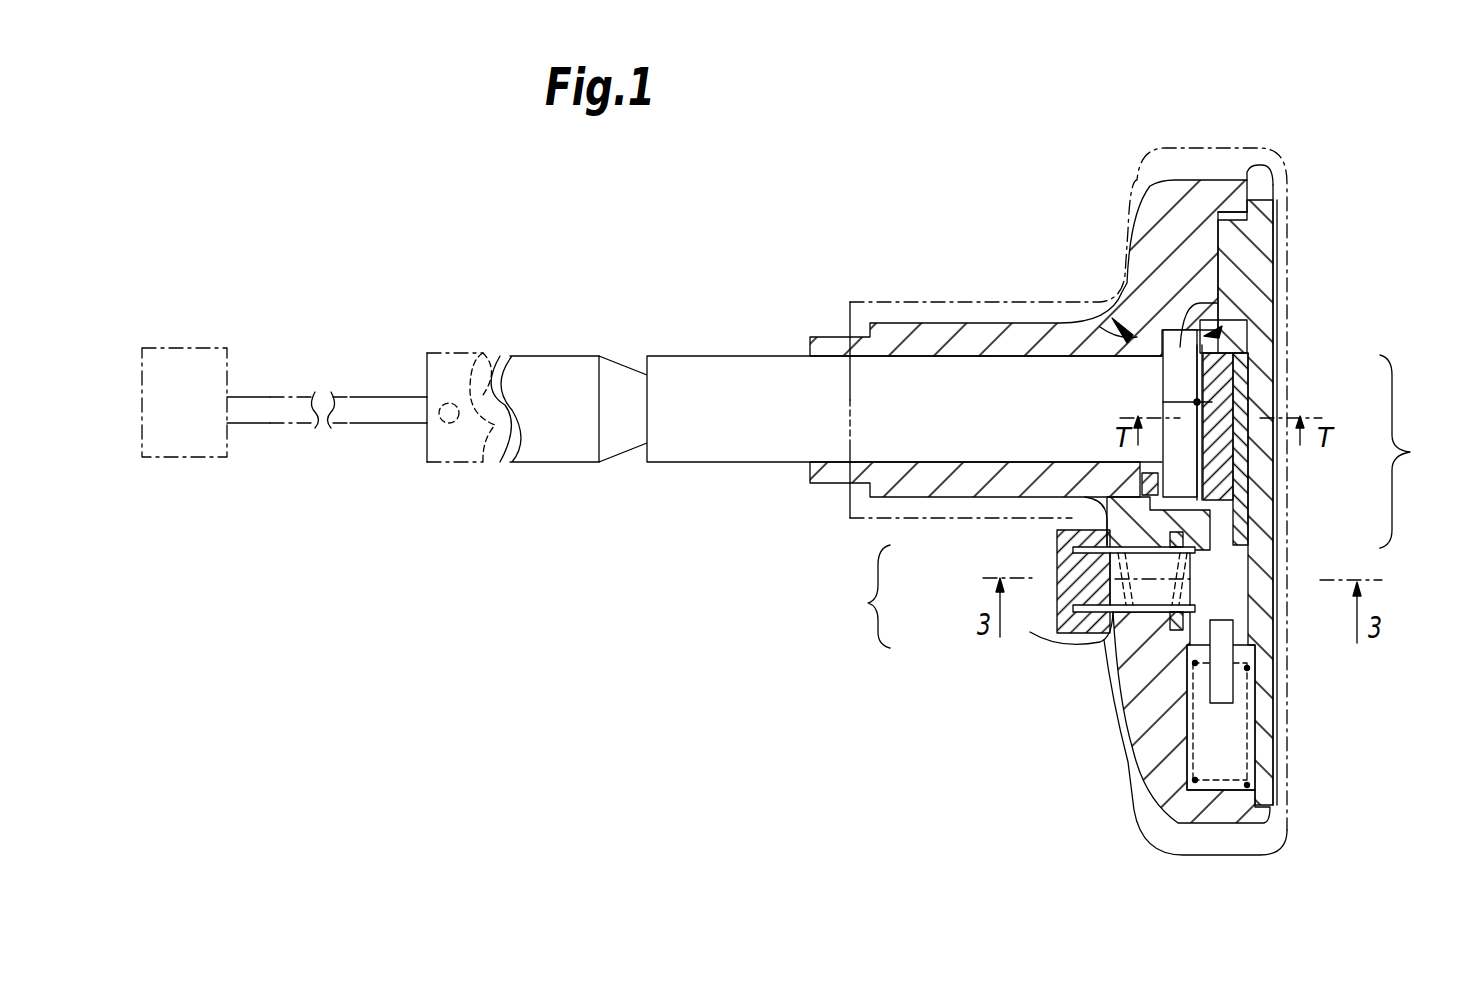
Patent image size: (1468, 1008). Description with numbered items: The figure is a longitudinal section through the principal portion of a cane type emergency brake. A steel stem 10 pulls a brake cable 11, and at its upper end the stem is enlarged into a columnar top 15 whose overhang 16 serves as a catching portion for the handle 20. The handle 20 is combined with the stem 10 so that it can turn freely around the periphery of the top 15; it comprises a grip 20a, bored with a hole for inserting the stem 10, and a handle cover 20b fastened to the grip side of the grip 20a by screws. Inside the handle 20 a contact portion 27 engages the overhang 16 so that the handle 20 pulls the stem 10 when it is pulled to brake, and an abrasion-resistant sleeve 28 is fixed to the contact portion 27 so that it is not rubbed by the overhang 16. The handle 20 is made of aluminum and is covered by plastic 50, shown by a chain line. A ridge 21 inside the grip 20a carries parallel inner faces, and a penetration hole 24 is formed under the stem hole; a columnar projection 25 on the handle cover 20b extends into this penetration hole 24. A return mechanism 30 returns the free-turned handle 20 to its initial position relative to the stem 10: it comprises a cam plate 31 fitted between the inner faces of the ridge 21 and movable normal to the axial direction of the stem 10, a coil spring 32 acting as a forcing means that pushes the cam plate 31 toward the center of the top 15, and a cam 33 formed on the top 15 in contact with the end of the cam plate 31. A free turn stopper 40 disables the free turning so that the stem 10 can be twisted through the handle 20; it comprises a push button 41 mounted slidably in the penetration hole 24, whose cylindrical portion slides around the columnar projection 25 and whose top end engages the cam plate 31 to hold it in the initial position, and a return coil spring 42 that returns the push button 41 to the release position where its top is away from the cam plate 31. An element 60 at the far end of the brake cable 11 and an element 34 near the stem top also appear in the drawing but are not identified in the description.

The stem 10 is at (668, 378).
The brake cable 11 is at (352, 428).
The engine / power unit 60 is at (213, 445).
The handle 20 is at (1158, 218).
The grip 20a is at (1267, 153).
The handle cover 20b is at (1265, 250).
The ridge 21 is at (1278, 187).
The overhang 16 is at (1217, 310).
The top 15 is at (1222, 335).
The cam 33 is at (1240, 393).
The return mechanism 30 is at (1420, 451).
The cam plate 31 is at (1240, 472).
The columnar projection 25 is at (1237, 533).
The coil spring 32 is at (1273, 620).
The abrasion-resistant sleeve 28 is at (1128, 332).
The contact portion 27 is at (1120, 320).
The hub 34 is at (1194, 402).
The push button 41 is at (1060, 552).
The free turn stopper 40 is at (860, 596).
The return coil spring 42 is at (1060, 620).
The penetration hole 24 is at (1115, 620).
The plastic 50 is at (1290, 830).